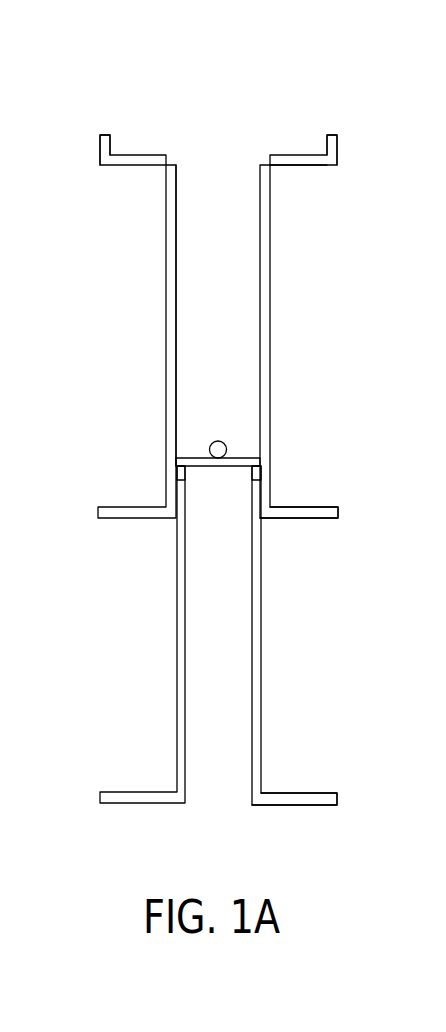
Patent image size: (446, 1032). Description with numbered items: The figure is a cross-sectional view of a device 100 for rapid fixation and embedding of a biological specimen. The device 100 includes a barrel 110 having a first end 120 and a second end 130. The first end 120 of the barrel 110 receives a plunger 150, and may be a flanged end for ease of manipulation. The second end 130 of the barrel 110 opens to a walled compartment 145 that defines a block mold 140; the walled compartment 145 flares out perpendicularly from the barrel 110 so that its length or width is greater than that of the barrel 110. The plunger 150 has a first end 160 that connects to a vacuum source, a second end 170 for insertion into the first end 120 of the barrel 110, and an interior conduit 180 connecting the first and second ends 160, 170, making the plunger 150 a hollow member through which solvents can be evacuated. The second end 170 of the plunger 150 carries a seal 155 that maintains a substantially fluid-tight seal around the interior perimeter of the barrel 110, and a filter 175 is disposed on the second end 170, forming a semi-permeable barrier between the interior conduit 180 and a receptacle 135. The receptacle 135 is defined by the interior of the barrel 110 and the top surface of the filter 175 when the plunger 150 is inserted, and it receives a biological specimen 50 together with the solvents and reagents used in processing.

The device 100 is at (252, 99).
The block mold 140 is at (146, 132).
The barrel 110 is at (272, 316).
The walled compartment 145 is at (99, 152).
The second end of the barrel 130 is at (271, 174).
The receptacle 135 is at (192, 392).
The second end of the plunger 170 is at (255, 464).
The biological specimen 50 is at (221, 440).
The filter 175 is at (176, 462).
The seal 155 is at (177, 474).
The first end of the barrel 120 is at (330, 507).
The plunger 150 is at (262, 658).
The first end of the plunger 160 is at (262, 790).
The interior conduit 180 is at (208, 792).